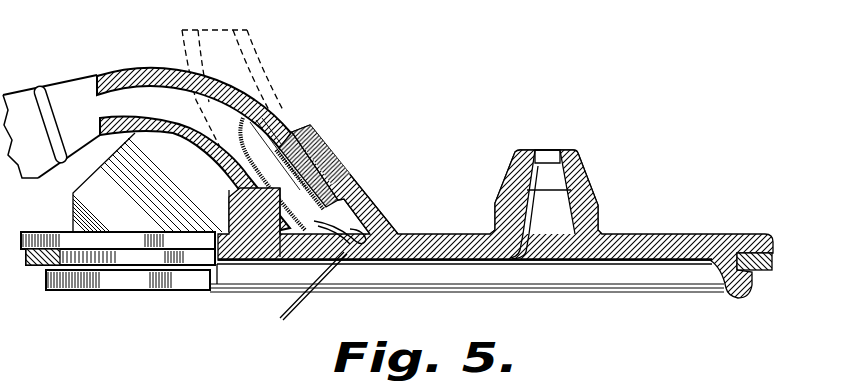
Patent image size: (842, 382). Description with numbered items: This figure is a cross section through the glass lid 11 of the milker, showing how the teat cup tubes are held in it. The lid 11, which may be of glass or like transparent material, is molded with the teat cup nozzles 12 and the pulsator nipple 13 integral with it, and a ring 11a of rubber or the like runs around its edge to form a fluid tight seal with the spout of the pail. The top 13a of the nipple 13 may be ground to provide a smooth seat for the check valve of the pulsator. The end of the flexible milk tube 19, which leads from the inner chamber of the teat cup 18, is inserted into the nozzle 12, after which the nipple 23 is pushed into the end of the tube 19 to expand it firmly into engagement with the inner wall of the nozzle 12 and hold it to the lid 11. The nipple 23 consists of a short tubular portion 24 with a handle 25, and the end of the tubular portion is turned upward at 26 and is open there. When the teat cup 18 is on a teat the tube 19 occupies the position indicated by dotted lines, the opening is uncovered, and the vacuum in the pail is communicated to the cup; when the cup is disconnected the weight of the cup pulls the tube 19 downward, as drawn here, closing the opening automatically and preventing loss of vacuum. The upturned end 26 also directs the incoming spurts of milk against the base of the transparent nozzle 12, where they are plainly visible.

The lid 11 is at (443, 230).
The ring 11a is at (40, 262).
The teat cup nozzle 12 is at (360, 182).
The pulsator nipple 13 is at (597, 190).
The top of nipple 13a is at (537, 132).
The teat cup 18 is at (22, 97).
The flexible milk tube 19 is at (237, 97).
The nipple 23 is at (313, 147).
The tubular portion 24 is at (298, 228).
The handle 25 is at (298, 303).
The upturned end 26 is at (368, 258).